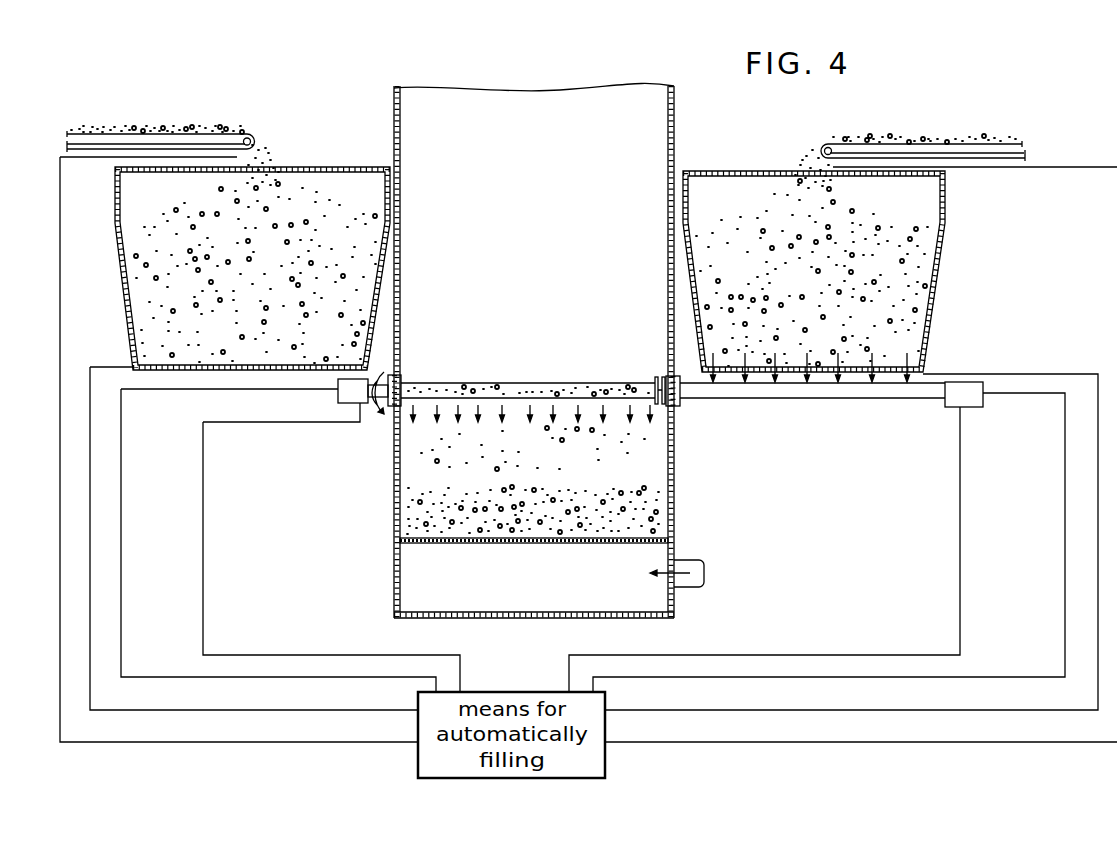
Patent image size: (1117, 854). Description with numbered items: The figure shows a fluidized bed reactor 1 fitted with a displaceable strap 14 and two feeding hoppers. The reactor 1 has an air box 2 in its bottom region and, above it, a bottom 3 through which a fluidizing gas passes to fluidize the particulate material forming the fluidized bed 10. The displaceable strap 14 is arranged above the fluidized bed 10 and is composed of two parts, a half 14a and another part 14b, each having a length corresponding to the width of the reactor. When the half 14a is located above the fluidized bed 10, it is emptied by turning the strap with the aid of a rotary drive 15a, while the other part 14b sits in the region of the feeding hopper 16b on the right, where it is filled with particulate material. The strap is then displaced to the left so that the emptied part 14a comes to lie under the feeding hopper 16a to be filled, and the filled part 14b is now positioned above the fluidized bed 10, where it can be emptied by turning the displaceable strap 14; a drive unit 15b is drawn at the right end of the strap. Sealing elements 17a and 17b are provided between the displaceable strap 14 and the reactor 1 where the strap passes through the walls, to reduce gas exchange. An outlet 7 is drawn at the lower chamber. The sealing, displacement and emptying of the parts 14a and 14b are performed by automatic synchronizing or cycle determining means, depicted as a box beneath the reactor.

The fluidized bed reactor 1 is at (393, 500).
The air box 2 is at (470, 600).
The bottom 3 is at (532, 544).
The outlet 7 is at (674, 568).
The fluidized bed 10 is at (642, 525).
The displaceable strap 14 is at (561, 382).
The half of the displaceable strap 14a is at (466, 383).
The part of the displaceable strap 14b is at (898, 403).
The rotary drive 15a is at (366, 408).
The drive unit 15b is at (962, 383).
The feeding hopper 16a is at (126, 307).
The feeding hopper 16b is at (935, 305).
The sealing element 17a is at (393, 374).
The sealing element 17b is at (664, 374).